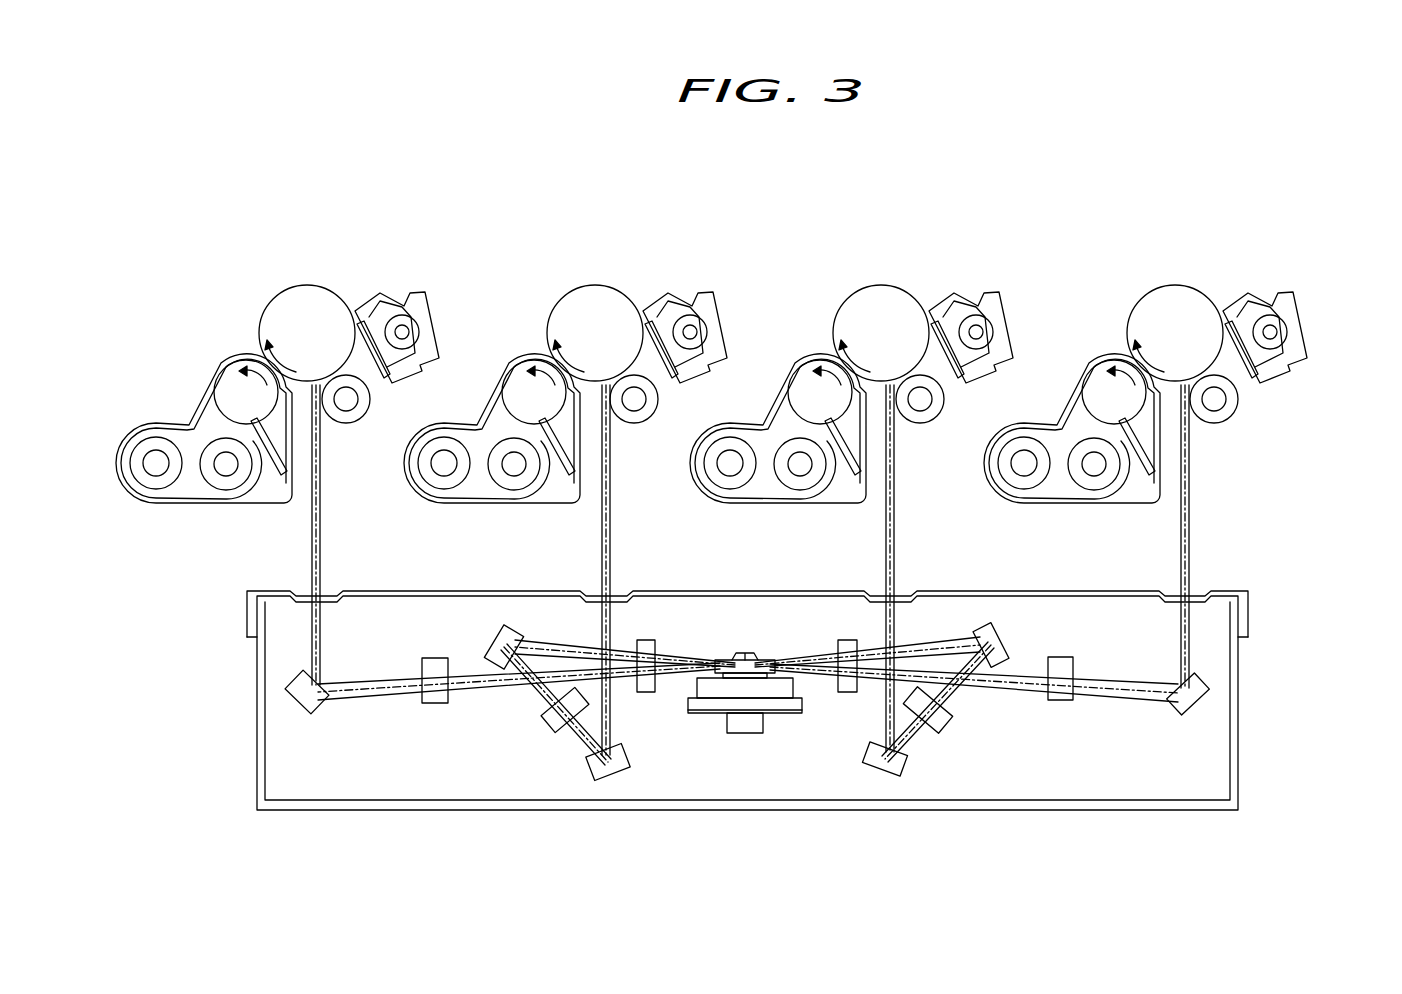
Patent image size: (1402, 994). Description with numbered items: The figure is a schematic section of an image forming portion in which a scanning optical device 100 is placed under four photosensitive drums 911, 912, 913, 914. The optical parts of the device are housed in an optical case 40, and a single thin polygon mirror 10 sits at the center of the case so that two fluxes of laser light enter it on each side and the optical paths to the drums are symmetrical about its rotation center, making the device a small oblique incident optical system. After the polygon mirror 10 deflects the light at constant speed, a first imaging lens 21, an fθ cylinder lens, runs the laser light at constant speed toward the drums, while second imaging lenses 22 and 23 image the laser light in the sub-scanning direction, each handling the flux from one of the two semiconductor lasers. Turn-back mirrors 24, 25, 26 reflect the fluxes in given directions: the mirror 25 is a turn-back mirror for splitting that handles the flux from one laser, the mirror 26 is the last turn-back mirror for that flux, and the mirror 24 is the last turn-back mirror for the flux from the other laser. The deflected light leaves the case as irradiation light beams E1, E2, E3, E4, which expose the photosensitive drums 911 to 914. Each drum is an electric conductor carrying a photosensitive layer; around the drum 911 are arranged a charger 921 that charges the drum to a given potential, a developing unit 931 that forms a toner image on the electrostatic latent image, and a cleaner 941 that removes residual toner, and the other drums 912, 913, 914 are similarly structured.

The polygon mirror 10 is at (773, 688).
The first imaging lens 21 is at (841, 640).
The second imaging lens 22 is at (1070, 700).
The second imaging lens 23 is at (950, 727).
The turn-back mirror 24 is at (1195, 700).
The turn-back mirror for splitting 25 is at (1003, 637).
The turn-back mirror 26 is at (903, 773).
The optical case 40 is at (637, 790).
The scanning optical device 100 is at (820, 709).
The photosensitive drum 911 is at (1166, 298).
The photosensitive drum 912 is at (883, 285).
The photosensitive drum 913 is at (596, 285).
The photosensitive drum 914 is at (308, 285).
The charger 921 is at (1237, 407).
The developing unit 931 is at (1100, 380).
The cleaner 941 is at (1273, 310).
The irradiation light beam E1 is at (1190, 545).
The irradiation light beam E2 is at (895, 545).
The irradiation light beam E3 is at (610, 545).
The irradiation light beam E4 is at (322, 545).